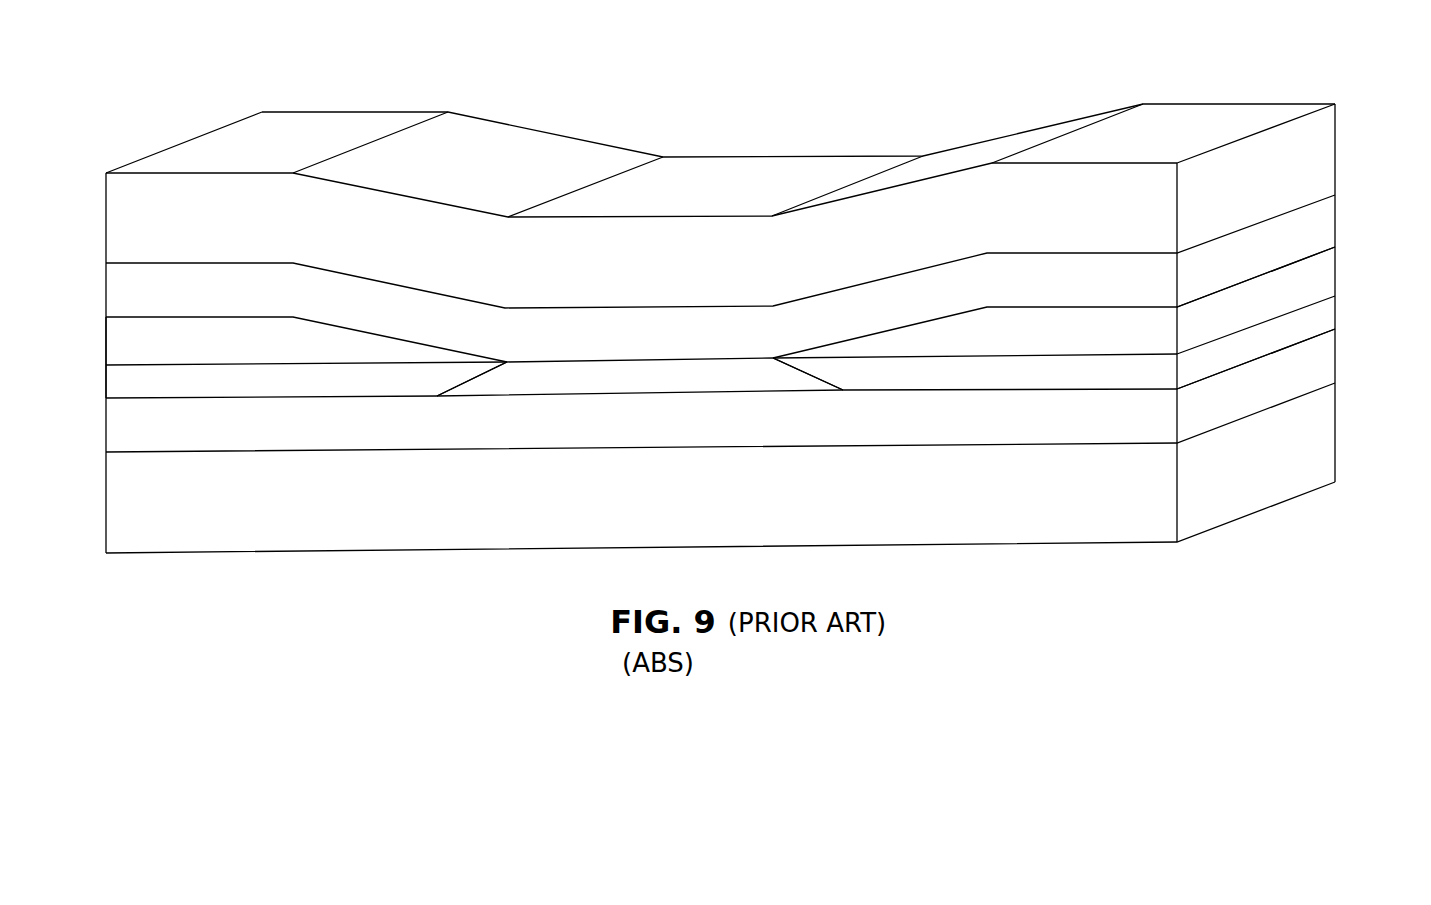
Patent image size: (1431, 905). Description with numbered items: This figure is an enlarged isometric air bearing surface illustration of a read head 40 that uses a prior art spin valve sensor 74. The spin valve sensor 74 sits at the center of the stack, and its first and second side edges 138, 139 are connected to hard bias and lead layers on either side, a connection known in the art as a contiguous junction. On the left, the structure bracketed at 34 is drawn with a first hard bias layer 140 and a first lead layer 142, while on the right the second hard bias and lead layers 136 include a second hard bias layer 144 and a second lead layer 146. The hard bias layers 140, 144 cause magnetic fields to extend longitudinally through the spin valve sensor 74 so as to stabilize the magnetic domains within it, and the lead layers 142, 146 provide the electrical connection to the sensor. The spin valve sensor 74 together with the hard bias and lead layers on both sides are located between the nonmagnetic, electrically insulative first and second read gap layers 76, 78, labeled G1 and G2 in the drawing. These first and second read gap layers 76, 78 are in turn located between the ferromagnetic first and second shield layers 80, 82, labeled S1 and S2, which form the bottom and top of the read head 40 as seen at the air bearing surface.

The read head 40 is at (826, 102).
The second shield layer 82 is at (563, 147).
The second read gap layer 78 is at (362, 297).
The spin valve sensor 74 is at (546, 350).
The first read gap layer 76 is at (517, 439).
The first shield layer 80 is at (288, 528).
The first lead layer 142 is at (150, 330).
The second lead layer 146 is at (1122, 318).
The first hard bias layer 140 is at (152, 383).
The second hard bias layer 144 is at (1122, 373).
The first side edge 138 is at (457, 385).
The second side edge 139 is at (827, 379).
The first lead/hard bias structure 34 is at (102, 318).
The second hard bias and lead layers 136 is at (1344, 244).